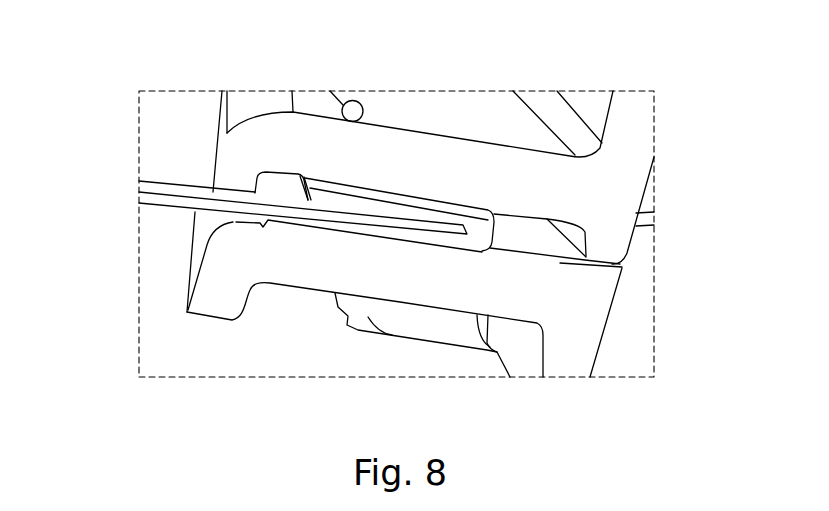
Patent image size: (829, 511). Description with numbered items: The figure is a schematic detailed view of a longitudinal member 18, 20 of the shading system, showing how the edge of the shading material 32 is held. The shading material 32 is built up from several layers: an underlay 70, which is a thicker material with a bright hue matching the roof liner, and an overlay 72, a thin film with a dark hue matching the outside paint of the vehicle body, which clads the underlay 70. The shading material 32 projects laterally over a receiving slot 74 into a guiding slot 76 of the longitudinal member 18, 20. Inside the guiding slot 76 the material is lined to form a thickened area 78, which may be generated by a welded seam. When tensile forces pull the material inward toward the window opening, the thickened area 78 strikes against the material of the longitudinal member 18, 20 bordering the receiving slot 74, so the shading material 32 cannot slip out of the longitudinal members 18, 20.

The longitudinal member 18 is at (633, 74).
The longitudinal member 20 is at (413, 188).
The shading material 32 is at (58, 178).
The overlay 72 is at (139, 182).
The underlay 70 is at (140, 201).
The receiving slot 74 is at (236, 222).
The thickened area 78 is at (308, 199).
The guiding slot 76 is at (523, 235).